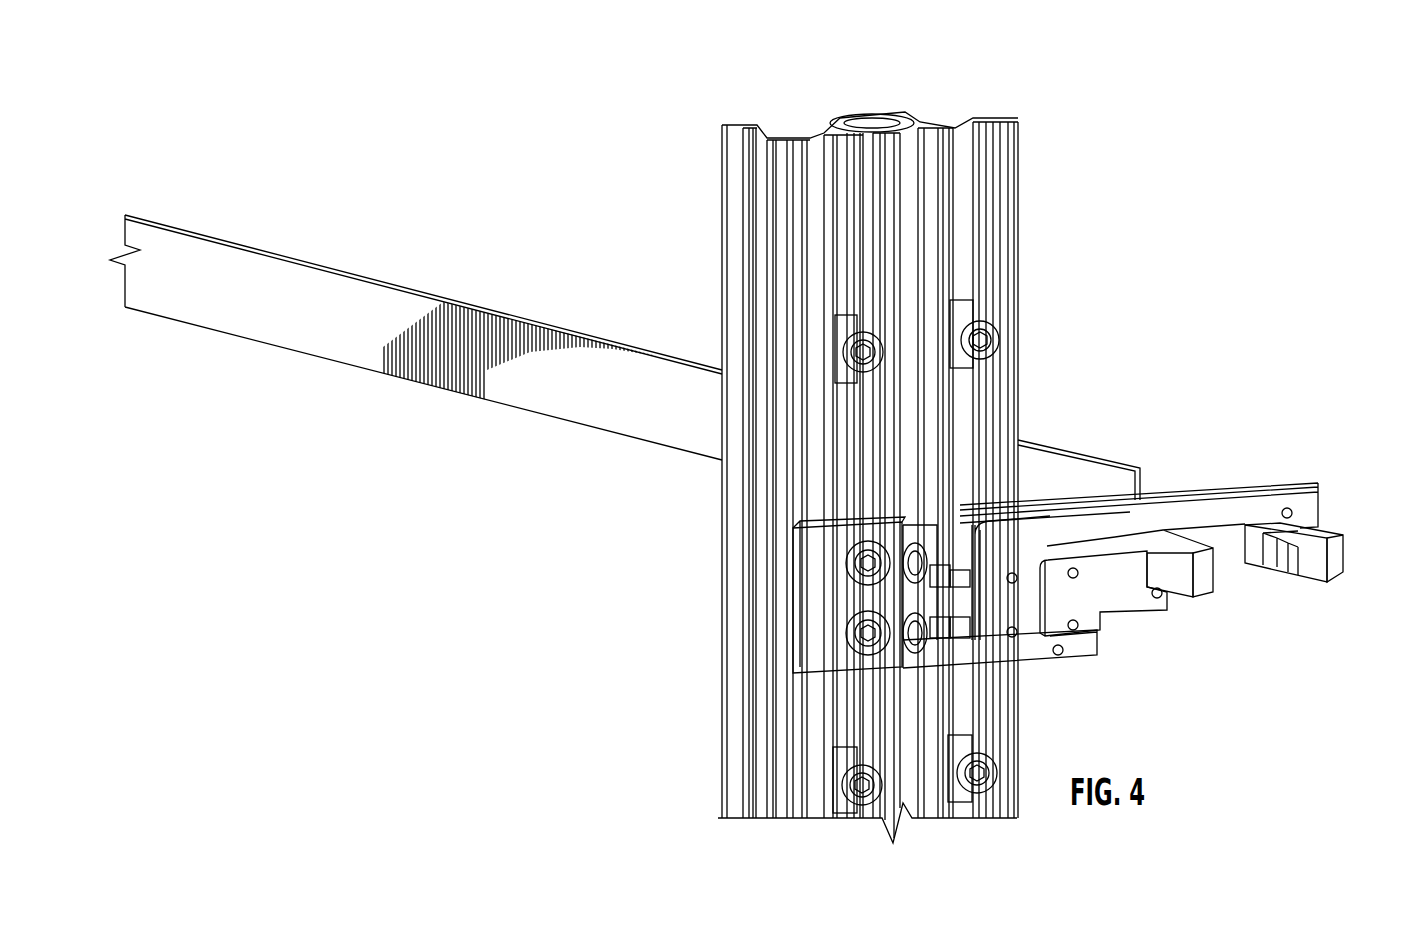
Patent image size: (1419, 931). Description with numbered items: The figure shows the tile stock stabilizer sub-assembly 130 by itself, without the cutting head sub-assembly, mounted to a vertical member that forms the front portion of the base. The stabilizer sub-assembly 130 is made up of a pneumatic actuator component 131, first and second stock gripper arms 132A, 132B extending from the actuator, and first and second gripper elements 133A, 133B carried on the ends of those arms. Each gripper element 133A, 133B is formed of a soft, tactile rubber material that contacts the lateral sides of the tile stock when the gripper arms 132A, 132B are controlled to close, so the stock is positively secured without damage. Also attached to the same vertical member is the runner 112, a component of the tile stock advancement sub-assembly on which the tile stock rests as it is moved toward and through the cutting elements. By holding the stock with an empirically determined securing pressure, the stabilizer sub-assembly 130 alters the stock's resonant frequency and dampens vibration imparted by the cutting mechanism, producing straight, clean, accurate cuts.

The tile stock stabilizer sub-assembly 130 is at (882, 73).
The runner 112 is at (303, 259).
The pneumatic actuator component 131 is at (1035, 655).
The first stock gripper arm 132A is at (1260, 486).
The second stock gripper arm 132B is at (1100, 605).
The first gripper element 133A is at (1347, 553).
The second gripper element 133B is at (1200, 590).